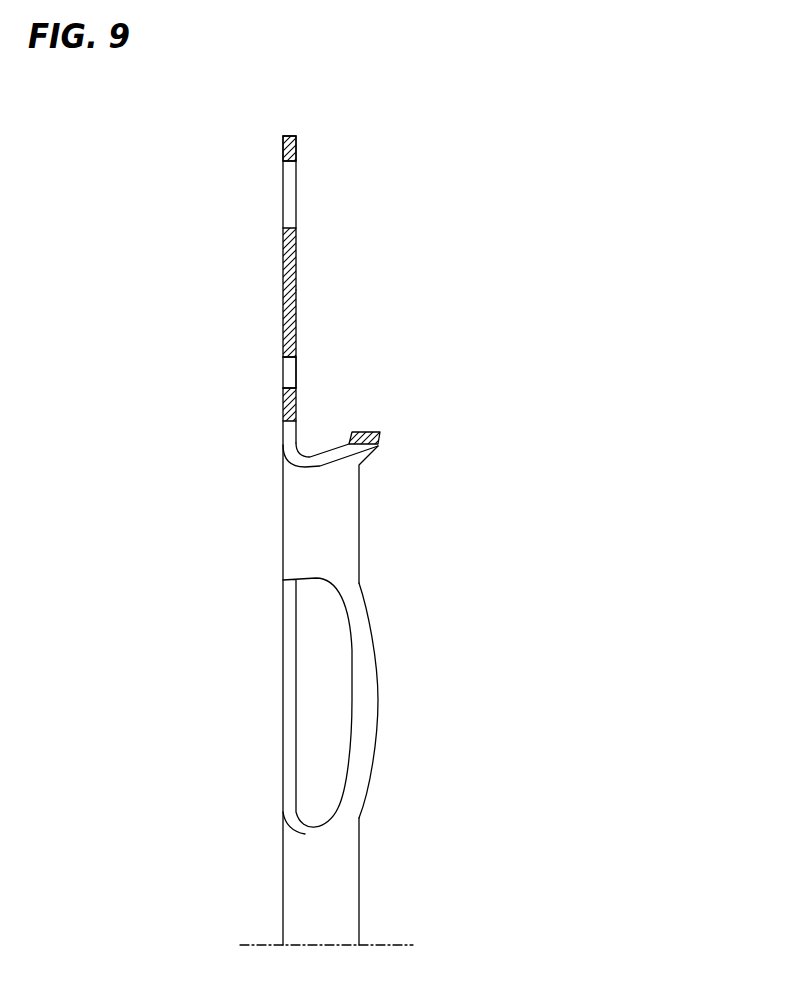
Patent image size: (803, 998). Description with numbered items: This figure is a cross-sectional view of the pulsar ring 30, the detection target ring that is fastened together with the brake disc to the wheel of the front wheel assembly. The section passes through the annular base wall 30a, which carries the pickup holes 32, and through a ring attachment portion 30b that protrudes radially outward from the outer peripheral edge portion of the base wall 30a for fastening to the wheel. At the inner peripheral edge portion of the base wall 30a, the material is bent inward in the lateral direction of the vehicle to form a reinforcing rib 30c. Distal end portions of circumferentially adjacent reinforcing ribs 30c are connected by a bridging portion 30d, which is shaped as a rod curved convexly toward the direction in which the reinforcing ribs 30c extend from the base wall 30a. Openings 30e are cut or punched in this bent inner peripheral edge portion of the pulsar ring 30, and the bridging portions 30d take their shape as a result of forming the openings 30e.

The pulsar ring 30 is at (398, 133).
The annular base wall 30a is at (282, 325).
The ring attachment portion 30b is at (282, 270).
The reinforcing rib 30c is at (346, 523).
The bridging portion 30d is at (382, 438).
The opening 30e is at (312, 460).
The pickup hole 32 is at (282, 367).